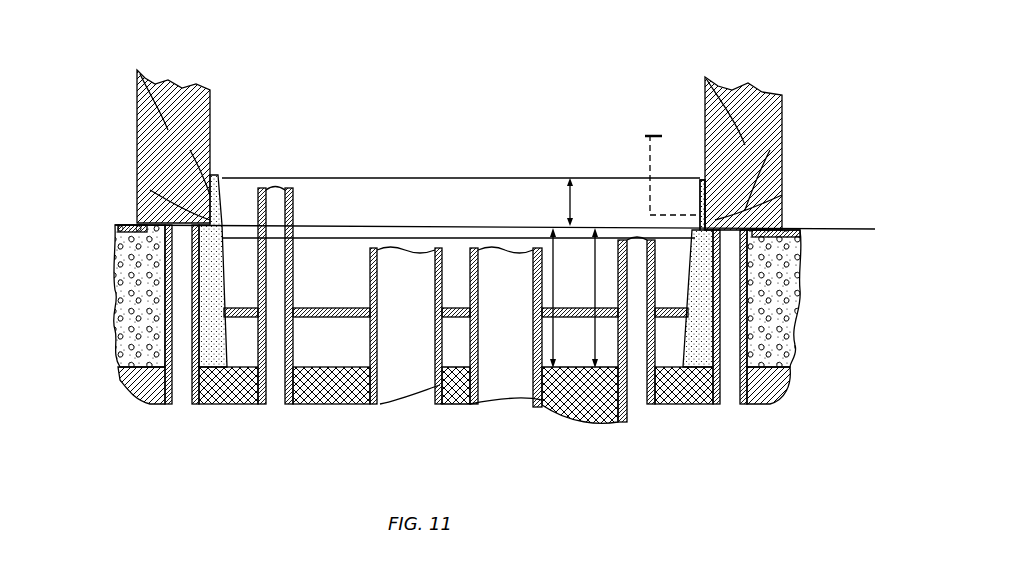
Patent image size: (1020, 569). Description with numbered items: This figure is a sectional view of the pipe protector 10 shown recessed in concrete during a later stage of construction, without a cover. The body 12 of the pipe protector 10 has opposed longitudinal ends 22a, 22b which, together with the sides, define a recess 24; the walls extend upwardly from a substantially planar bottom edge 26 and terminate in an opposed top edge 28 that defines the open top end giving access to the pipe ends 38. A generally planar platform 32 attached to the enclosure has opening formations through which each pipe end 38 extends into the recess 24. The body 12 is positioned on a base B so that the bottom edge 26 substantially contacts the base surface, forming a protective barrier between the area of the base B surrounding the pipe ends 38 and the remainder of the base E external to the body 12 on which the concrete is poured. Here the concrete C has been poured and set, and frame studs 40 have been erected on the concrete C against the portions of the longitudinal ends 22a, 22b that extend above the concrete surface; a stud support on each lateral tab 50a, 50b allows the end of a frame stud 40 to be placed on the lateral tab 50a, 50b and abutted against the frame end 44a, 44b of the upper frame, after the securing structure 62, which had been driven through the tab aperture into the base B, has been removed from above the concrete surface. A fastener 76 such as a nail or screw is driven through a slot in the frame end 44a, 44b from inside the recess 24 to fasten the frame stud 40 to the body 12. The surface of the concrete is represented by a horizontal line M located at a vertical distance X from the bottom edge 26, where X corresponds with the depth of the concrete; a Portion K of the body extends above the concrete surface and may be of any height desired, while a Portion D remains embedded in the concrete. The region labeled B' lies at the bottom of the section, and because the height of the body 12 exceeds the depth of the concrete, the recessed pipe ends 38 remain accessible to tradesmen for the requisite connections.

The pipe protector 10 is at (496, 106).
The body 12 is at (308, 178).
The longitudinal end 22a is at (688, 395).
The longitudinal end 22b is at (230, 186).
The recess 24 is at (432, 190).
The bottom edge 26 is at (222, 380).
The top edge 28 is at (400, 180).
The platform 32 is at (457, 318).
The pipe ends 38 is at (342, 188).
The frame studs 40 is at (765, 140).
The frame end 44a is at (700, 180).
The frame end 44b is at (215, 175).
The lateral tab 50a is at (795, 229).
The lateral tab 50b is at (132, 225).
The securing structure 62 is at (737, 405).
The fastener 76 is at (640, 132).
The base B is at (119, 394).
The bottom block B' is at (456, 415).
The concrete slab C is at (775, 285).
The Portion D is at (553, 335).
The remainder of the base E is at (770, 395).
The Portion K is at (515, 186).
The horizontal line M is at (835, 229).
The vertical distance X is at (595, 350).